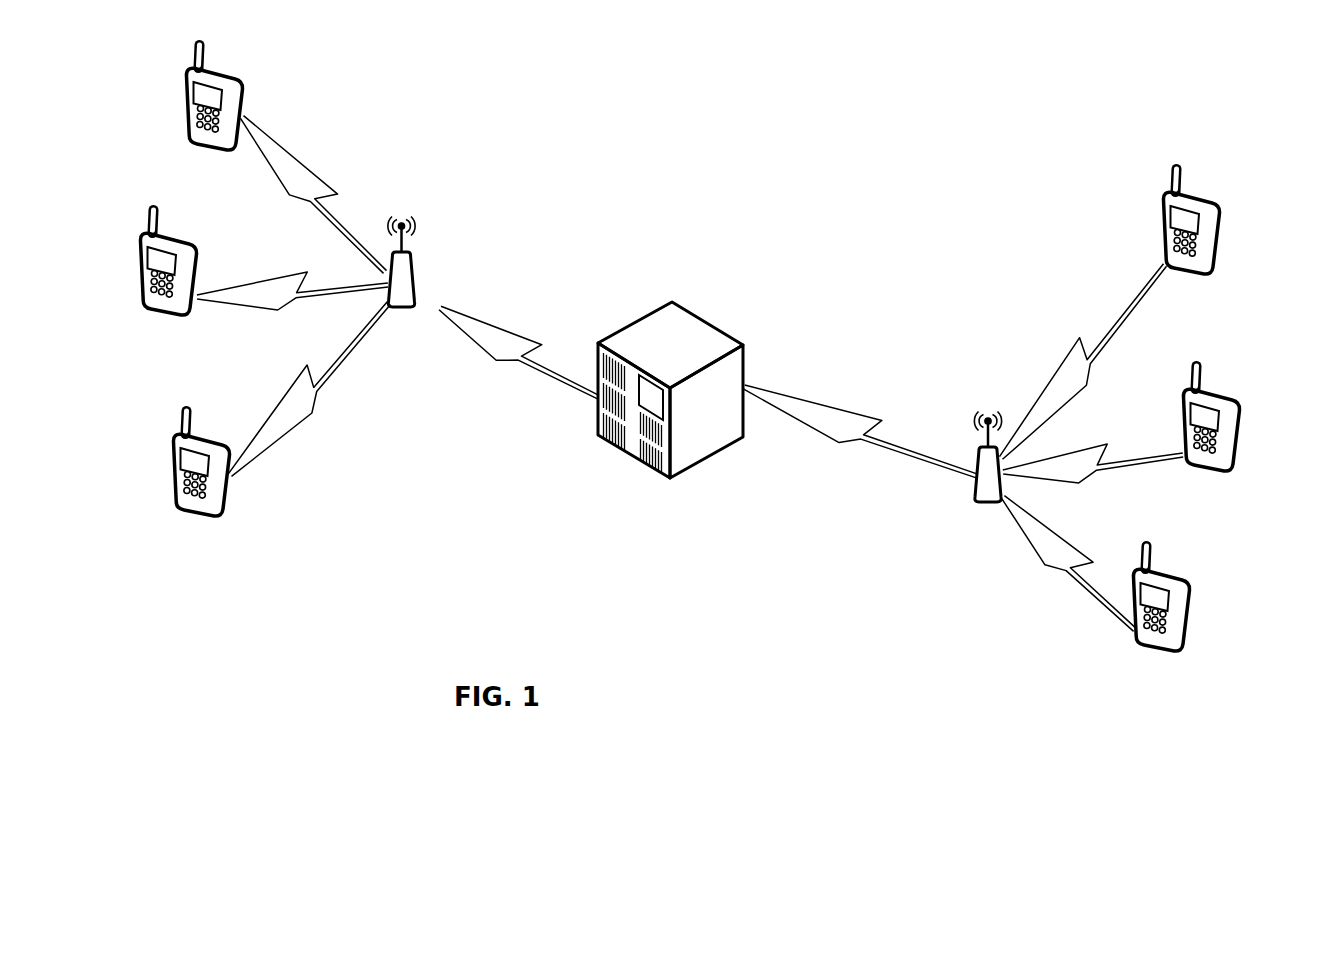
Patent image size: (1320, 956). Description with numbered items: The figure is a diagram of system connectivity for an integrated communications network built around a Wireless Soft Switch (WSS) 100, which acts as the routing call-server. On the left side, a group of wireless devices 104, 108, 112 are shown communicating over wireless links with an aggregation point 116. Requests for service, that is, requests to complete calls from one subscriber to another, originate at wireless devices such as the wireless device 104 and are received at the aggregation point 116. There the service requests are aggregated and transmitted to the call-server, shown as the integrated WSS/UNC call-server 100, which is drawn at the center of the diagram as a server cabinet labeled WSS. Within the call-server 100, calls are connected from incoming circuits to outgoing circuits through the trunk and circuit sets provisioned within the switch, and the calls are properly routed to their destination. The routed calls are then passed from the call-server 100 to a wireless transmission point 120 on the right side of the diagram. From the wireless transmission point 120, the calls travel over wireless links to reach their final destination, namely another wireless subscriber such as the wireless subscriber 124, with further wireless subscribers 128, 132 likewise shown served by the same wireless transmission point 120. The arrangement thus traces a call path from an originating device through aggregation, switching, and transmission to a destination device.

The Wireless Soft Switch (WSS) 100 is at (625, 448).
The wireless device 104 is at (187, 73).
The wireless device 108 is at (157, 312).
The wireless device 112 is at (182, 512).
The aggregation point 116 is at (415, 288).
The wireless transmission point 120 is at (975, 460).
The wireless subscriber 124 is at (1222, 257).
The wireless subscriber 128 is at (1240, 457).
The wireless subscriber 132 is at (1188, 643).